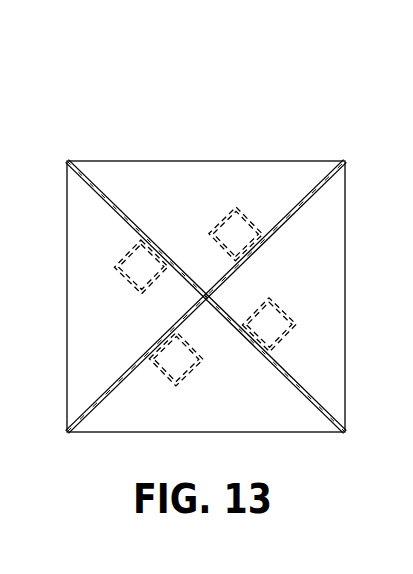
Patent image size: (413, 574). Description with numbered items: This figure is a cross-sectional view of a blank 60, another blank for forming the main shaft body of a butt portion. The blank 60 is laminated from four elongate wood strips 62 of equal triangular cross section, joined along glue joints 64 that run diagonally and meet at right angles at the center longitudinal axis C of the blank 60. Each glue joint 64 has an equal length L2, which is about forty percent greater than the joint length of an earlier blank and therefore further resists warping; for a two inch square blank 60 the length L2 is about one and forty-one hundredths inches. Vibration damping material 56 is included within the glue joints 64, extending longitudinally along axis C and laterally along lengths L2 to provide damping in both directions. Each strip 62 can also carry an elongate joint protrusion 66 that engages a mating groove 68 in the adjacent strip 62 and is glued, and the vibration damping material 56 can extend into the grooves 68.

The blank 60 is at (150, 128).
The strip 62 is at (200, 173).
The glue joint 64 is at (290, 217).
The vibration damping material 56 is at (318, 192).
The joint protrusion 66 is at (124, 252).
The groove 68 is at (121, 276).
The center longitudinal axis C is at (206, 300).
The length L2 is at (297, 205).